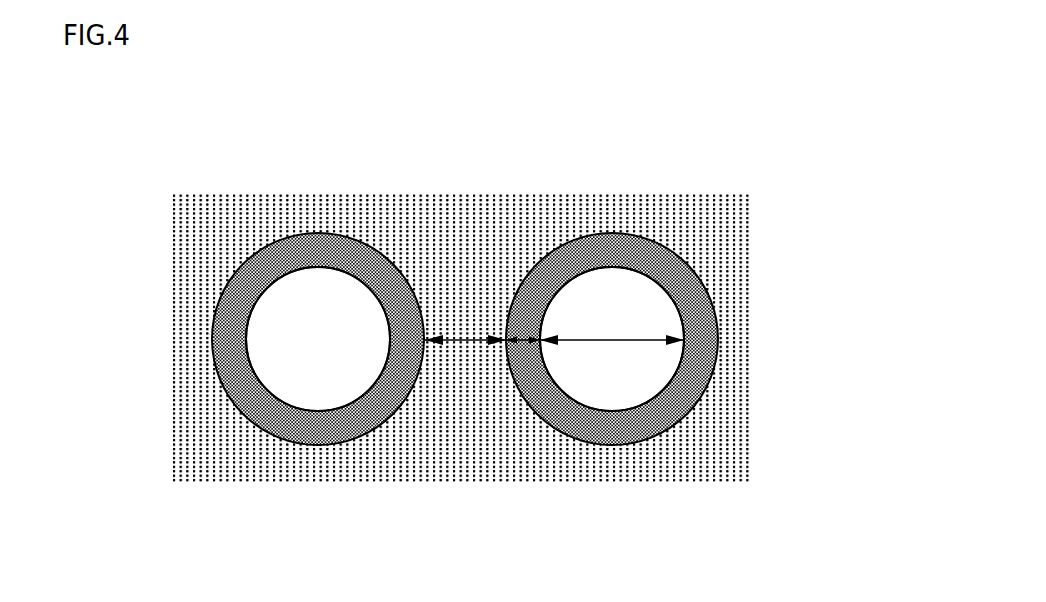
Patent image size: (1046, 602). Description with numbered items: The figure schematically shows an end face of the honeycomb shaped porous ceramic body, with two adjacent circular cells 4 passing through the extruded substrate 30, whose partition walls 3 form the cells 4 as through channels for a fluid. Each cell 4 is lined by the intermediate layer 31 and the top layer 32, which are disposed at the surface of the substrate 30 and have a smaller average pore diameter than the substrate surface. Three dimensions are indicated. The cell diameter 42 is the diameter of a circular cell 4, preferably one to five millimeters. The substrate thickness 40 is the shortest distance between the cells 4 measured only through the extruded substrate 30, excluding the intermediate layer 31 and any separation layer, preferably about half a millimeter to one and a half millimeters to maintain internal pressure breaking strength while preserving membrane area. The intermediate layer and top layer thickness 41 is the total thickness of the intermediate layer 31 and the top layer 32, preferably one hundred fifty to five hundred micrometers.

The partition wall 3 is at (468, 408).
The substrate 30 is at (693, 428).
The cell 4 is at (306, 295).
The intermediate layer 31 is at (313, 423).
The top layer 32 is at (618, 417).
The substrate thickness 40 is at (455, 332).
The intermediate layer and top layer thickness 41 is at (515, 332).
The cell diameter 42 is at (574, 332).